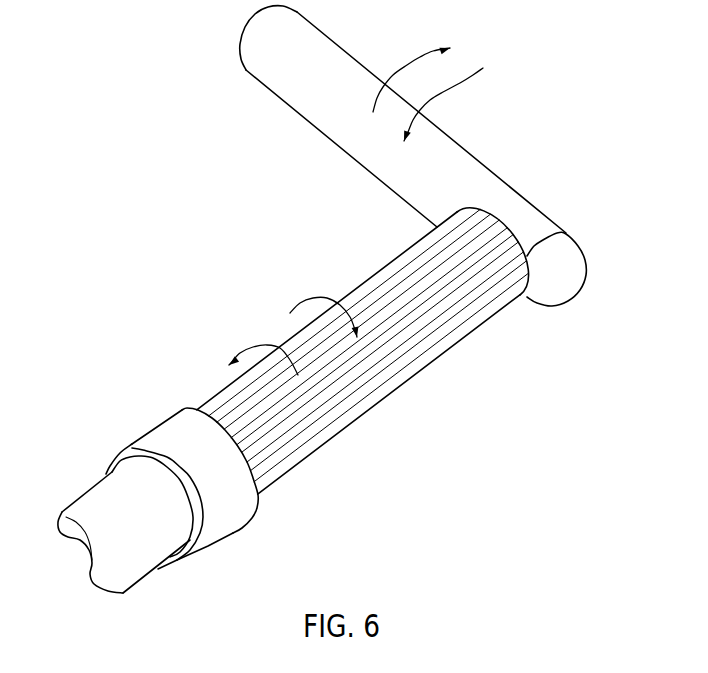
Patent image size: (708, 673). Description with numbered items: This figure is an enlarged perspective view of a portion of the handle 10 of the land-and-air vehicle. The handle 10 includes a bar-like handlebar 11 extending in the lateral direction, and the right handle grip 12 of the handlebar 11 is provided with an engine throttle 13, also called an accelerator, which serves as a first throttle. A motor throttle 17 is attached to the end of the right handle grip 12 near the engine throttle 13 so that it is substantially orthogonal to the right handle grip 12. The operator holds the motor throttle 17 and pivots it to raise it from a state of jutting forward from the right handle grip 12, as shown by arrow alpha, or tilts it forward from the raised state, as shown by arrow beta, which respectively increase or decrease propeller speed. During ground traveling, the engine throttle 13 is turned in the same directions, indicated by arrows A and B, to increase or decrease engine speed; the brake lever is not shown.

The handle 10 is at (580, 293).
The handlebar 11 is at (140, 422).
The right handle grip 12 is at (323, 452).
The engine throttle 13 is at (432, 320).
The motor throttle 17 is at (300, 92).